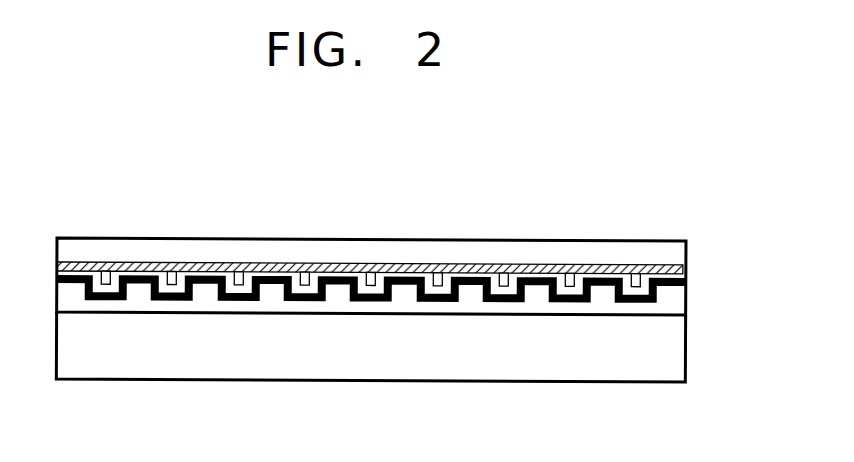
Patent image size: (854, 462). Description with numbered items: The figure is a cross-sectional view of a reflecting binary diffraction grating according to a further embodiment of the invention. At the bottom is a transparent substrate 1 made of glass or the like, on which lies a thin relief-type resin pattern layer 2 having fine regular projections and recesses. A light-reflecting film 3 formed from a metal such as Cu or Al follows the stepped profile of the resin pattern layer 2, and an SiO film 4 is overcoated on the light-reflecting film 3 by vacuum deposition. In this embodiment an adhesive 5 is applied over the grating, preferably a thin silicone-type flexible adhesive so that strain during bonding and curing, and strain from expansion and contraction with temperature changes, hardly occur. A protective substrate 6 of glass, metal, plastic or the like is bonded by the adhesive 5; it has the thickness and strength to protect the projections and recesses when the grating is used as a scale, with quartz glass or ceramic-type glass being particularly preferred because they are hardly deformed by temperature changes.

The transparent substrate 1 is at (672, 344).
The relief-type resin pattern layer 2 is at (677, 297).
The light-reflecting film 3 is at (686, 284).
The SiO film 4 is at (687, 275).
The adhesive 5 is at (685, 265).
The protective substrate 6 is at (670, 249).